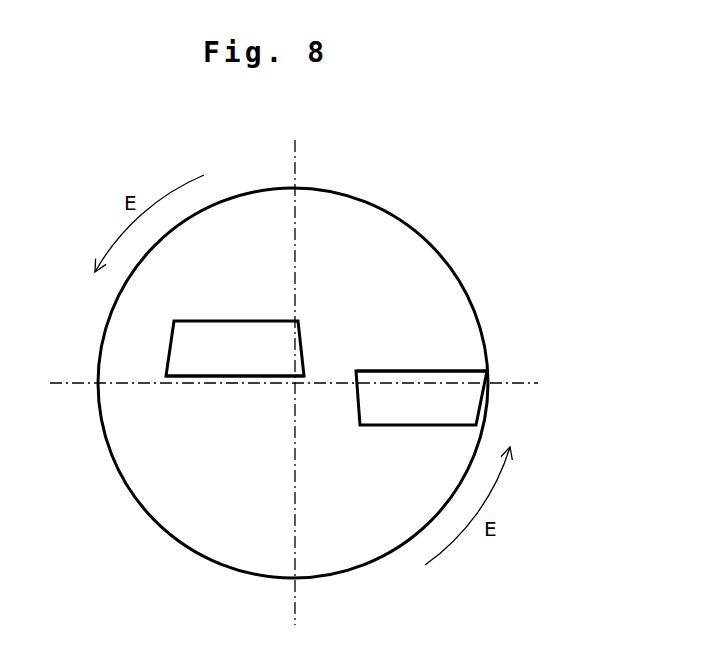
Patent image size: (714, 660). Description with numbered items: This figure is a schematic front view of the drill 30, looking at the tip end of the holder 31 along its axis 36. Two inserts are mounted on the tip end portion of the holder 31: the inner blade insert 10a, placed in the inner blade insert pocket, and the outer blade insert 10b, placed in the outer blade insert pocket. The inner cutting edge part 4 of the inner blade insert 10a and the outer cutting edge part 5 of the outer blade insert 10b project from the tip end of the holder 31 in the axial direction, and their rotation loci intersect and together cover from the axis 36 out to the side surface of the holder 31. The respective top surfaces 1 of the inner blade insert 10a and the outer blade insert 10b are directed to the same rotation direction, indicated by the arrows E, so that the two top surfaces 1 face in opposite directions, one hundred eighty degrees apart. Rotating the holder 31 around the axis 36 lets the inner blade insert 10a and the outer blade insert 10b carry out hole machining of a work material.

The top surface 1 is at (315, 374).
The inner cutting edge part 4 is at (242, 376).
The outer cutting edge part 5 is at (410, 371).
The inner blade insert 10a is at (193, 350).
The outer blade insert 10b is at (462, 407).
The drill 30 is at (475, 247).
The holder 31 is at (123, 488).
The axis 36 is at (297, 385).